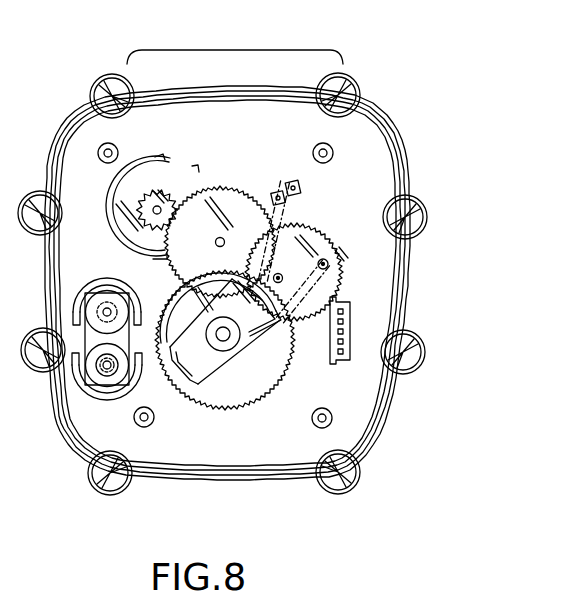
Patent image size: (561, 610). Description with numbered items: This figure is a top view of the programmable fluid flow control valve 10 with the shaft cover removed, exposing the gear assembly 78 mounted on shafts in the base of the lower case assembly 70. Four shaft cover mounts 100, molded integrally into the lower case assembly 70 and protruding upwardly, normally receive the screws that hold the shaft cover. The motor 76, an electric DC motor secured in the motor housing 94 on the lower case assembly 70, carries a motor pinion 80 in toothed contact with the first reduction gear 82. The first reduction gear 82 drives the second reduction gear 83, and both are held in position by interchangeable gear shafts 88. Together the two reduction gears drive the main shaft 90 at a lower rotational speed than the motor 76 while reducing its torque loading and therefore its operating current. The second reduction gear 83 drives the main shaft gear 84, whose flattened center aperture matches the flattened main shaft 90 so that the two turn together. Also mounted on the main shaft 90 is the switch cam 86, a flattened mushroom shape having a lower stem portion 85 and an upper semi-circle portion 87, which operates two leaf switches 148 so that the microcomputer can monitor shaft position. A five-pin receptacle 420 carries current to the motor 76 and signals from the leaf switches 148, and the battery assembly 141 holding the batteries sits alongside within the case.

The programmable fluid flow control valve 10 is at (399, 66).
The lower case assembly 70 is at (395, 172).
The motor 76 is at (118, 218).
The gear assembly 78 is at (234, 50).
The motor pinion 80 is at (150, 203).
The first reduction gear 82 is at (218, 200).
The second reduction gear 83 is at (330, 283).
The main shaft gear 84 is at (261, 370).
The lower stem portion 85 is at (229, 368).
The switch cam 86 is at (200, 372).
The upper semi-circle portion 87 is at (165, 360).
The gear shafts 88 is at (225, 239).
The main shaft 90 is at (215, 325).
The motor housing 94 is at (122, 231).
The shaft cover mounts 100 is at (333, 420).
The battery assembly 141 is at (72, 375).
The leaf switches 148 is at (326, 240).
The 5-pin receptacle 420 is at (343, 363).